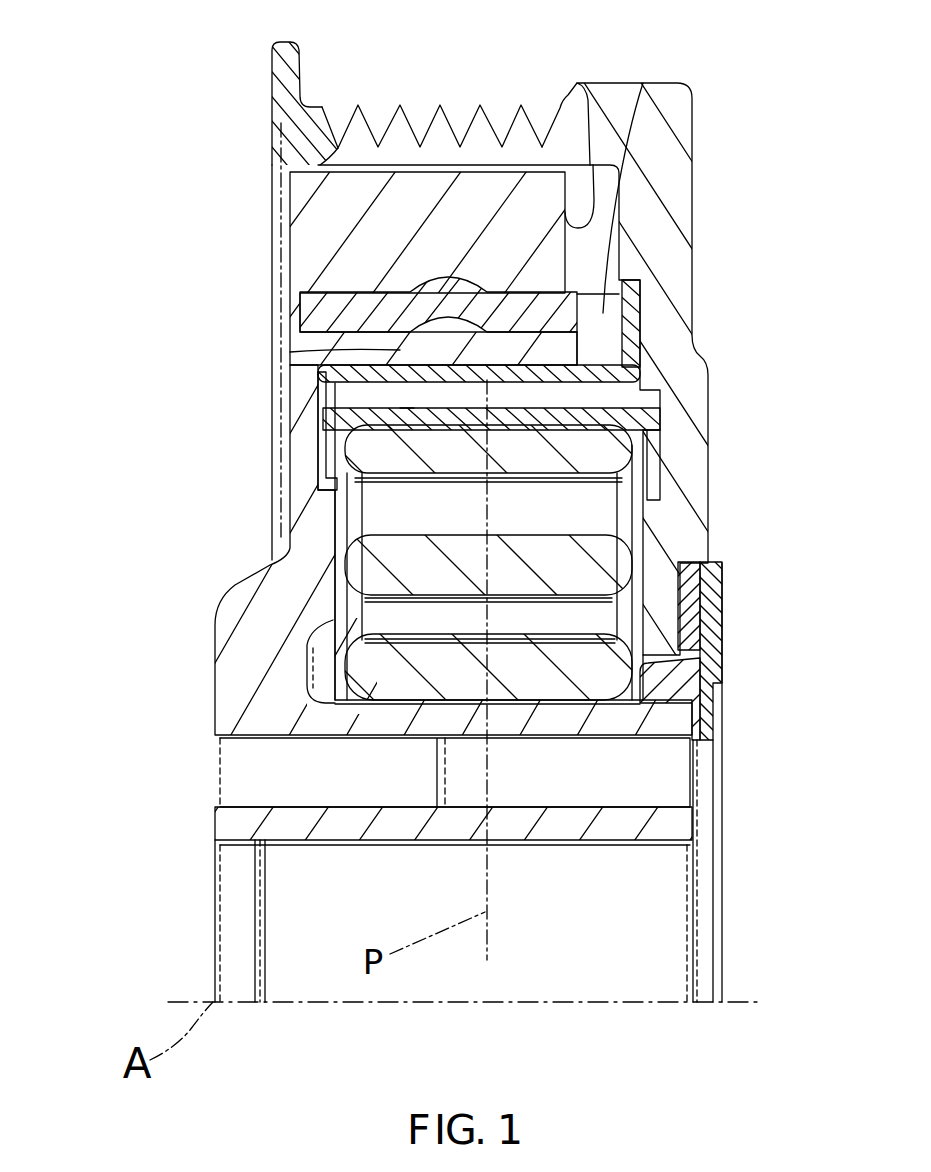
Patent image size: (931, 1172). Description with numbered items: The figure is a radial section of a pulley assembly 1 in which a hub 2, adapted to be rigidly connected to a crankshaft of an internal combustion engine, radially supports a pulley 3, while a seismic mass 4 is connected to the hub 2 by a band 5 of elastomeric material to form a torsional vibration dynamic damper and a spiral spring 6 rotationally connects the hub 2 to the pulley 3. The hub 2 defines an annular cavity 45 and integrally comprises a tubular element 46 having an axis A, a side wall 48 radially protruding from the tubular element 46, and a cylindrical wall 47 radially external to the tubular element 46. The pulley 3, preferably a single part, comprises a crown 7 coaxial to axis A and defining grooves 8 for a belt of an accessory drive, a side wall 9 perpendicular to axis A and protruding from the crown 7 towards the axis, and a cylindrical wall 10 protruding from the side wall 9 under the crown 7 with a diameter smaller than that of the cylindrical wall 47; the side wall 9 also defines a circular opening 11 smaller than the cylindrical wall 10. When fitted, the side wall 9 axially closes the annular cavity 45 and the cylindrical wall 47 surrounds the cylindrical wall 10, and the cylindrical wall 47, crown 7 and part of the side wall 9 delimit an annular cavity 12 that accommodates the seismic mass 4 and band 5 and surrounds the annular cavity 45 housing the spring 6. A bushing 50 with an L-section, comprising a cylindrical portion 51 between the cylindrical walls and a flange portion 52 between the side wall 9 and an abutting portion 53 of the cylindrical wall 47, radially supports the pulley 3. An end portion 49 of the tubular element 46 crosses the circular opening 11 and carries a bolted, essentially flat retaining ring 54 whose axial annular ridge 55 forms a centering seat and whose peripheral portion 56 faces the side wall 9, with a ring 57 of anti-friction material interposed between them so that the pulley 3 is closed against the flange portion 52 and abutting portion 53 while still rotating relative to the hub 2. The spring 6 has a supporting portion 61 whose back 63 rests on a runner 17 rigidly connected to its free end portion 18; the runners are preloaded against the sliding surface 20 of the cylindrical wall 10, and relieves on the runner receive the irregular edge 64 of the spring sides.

The pulley assembly 1 is at (120, 210).
The hub 2 is at (200, 846).
The pulley 3 is at (262, 127).
The seismic mass 4 is at (330, 196).
The band 5 is at (300, 310).
The spiral spring 6 is at (333, 562).
The crown 7 is at (557, 133).
The grooves 8 is at (458, 110).
The side wall 9 is at (680, 300).
The cylindrical wall 10 is at (553, 398).
The circular opening 11 is at (675, 665).
The annular cavity 12 is at (575, 226).
The runner 17 is at (600, 448).
The free end portion 18 is at (383, 447).
The sliding surface 20 is at (440, 440).
The annular cavity 45 is at (320, 660).
The tubular element 46 is at (294, 832).
The cylindrical wall 47 is at (400, 350).
The side wall 48 is at (290, 440).
The end portion 49 is at (615, 830).
The bushing 50 is at (660, 344).
The cylindrical portion 51 is at (458, 298).
The flange portion 52 is at (612, 303).
The abutting portion 53 is at (645, 80).
The retaining ring 54 is at (734, 830).
The axial annular ridge 55 is at (660, 695).
The peripheral portion 56 is at (714, 622).
The ring 57 is at (690, 592).
The supporting portion 61 is at (598, 500).
The back 63 is at (407, 400).
The edge 64 is at (658, 424).